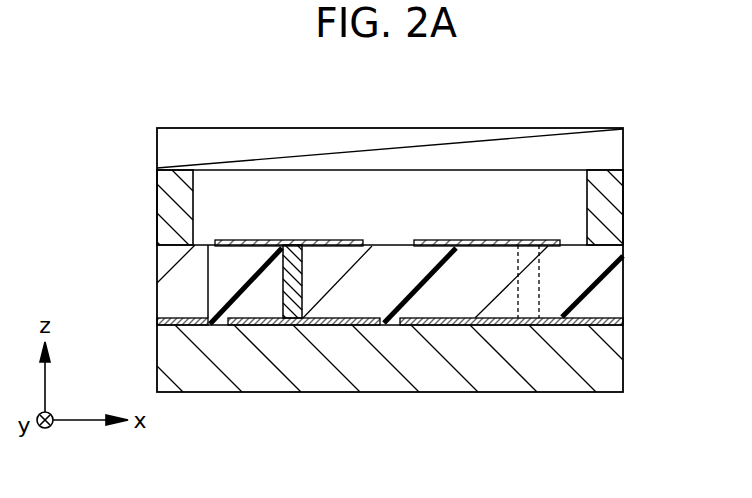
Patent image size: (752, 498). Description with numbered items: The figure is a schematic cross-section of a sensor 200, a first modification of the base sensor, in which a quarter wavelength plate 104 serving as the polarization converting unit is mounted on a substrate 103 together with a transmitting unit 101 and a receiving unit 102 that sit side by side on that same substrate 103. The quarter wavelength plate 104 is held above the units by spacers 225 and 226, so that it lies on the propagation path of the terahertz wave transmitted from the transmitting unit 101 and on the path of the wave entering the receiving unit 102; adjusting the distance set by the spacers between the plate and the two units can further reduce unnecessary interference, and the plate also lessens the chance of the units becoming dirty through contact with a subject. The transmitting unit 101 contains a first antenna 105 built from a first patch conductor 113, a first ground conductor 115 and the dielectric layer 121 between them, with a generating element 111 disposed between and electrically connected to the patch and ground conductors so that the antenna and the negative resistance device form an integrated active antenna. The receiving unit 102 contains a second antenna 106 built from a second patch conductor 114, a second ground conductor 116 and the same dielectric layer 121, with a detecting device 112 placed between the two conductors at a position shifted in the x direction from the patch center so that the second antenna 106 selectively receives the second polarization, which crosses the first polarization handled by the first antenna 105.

The sensor 200 is at (365, 490).
The quarter wavelength plate 104 is at (613, 150).
The spacer 225 is at (167, 198).
The spacer 226 is at (613, 207).
The transmitting unit 101 is at (217, 235).
The receiving unit 102 is at (414, 235).
The first antenna 105 is at (207, 243).
The second antenna 106 is at (400, 242).
The generating element 111 is at (295, 303).
The first patch conductor 113 is at (325, 246).
The second patch conductor 114 is at (457, 244).
The detecting device 112 is at (528, 290).
The dielectric layer 121 is at (613, 278).
The first ground conductor 115 is at (229, 322).
The second ground conductor 116 is at (580, 323).
The substrate 103 is at (613, 345).